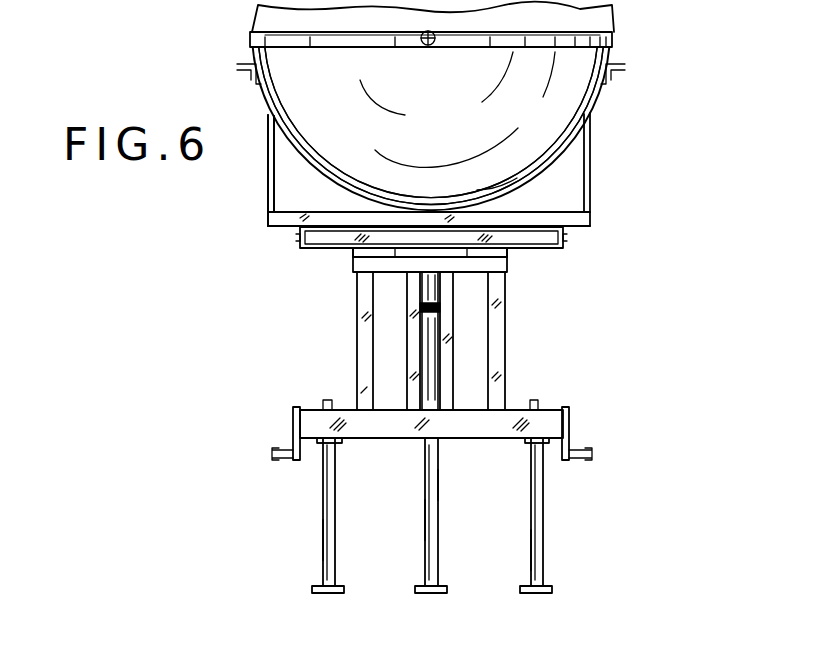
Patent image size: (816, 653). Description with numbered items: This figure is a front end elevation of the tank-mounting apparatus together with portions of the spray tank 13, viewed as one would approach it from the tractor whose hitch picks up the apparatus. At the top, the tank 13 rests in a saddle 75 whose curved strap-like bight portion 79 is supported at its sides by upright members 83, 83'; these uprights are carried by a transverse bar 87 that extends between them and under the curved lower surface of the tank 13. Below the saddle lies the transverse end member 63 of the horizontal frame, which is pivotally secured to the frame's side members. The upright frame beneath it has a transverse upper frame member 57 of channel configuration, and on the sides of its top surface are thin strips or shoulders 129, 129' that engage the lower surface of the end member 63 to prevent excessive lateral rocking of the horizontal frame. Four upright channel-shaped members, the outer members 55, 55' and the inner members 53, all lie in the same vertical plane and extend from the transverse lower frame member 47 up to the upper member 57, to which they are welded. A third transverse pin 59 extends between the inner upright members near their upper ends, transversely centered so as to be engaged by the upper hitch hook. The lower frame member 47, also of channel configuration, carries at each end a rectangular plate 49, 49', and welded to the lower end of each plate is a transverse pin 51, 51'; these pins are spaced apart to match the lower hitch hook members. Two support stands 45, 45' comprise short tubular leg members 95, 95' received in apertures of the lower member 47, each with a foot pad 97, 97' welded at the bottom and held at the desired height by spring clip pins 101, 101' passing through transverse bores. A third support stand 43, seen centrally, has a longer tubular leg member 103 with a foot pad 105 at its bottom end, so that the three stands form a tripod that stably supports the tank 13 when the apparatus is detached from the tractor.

The spray tank 13 is at (612, 50).
The support stand 43 is at (435, 36).
The saddle 75 is at (597, 108).
The bight portion 79 is at (531, 188).
The upright member 83 is at (465, 169).
The upright member 83' is at (237, 170).
The transverse bar 87 is at (328, 212).
The transverse end member 63 is at (335, 252).
The shoulder 129 is at (496, 265).
The shoulder 129' is at (382, 278).
The transverse upper frame member 57 is at (473, 273).
The upright channel-shaped member 55 is at (514, 341).
The upright channel-shaped member 55' is at (318, 341).
The upright channel-shaped member 53 is at (407, 313).
The third transverse pin 59 is at (422, 322).
The rectangular plate 49 is at (472, 420).
The rectangular plate 49' is at (250, 431).
The transverse pin 51 is at (621, 475).
The transverse pin 51' is at (244, 477).
The support stand 45 is at (584, 512).
The support stand 45' is at (292, 512).
The transverse lower frame member 47 is at (472, 438).
The foot pad 97 is at (579, 578).
The foot pad 97' is at (358, 575).
The foot pad 105 is at (457, 563).
The spring clip pin 101 is at (587, 483).
The spring clip pin 101' is at (362, 455).
The tubular leg member 95 is at (503, 550).
The tubular leg member 95' is at (362, 526).
The tubular leg member 103 is at (437, 473).